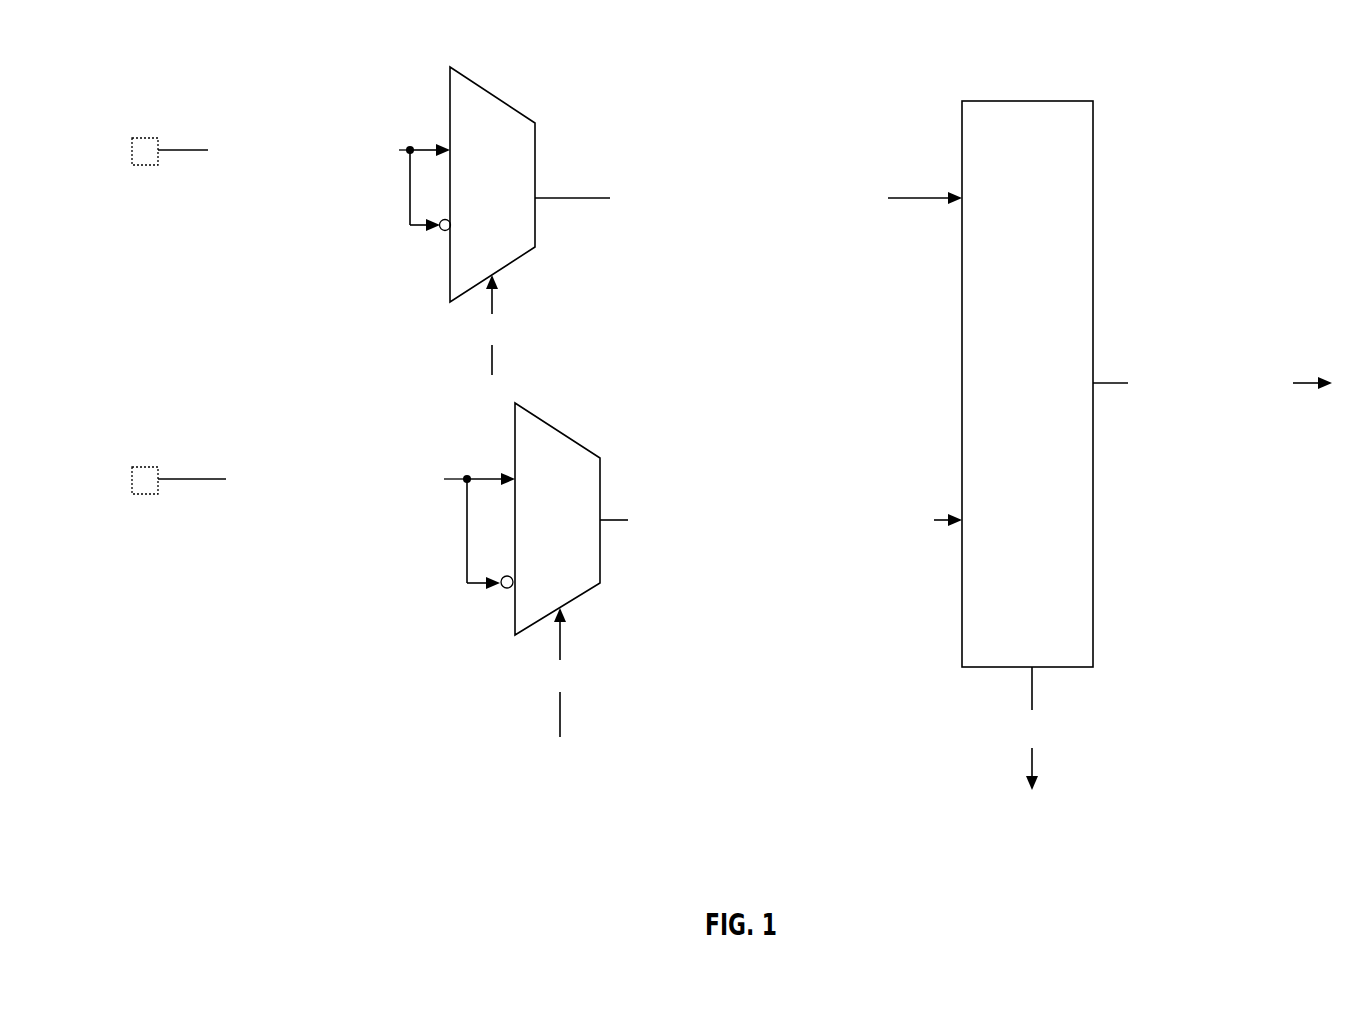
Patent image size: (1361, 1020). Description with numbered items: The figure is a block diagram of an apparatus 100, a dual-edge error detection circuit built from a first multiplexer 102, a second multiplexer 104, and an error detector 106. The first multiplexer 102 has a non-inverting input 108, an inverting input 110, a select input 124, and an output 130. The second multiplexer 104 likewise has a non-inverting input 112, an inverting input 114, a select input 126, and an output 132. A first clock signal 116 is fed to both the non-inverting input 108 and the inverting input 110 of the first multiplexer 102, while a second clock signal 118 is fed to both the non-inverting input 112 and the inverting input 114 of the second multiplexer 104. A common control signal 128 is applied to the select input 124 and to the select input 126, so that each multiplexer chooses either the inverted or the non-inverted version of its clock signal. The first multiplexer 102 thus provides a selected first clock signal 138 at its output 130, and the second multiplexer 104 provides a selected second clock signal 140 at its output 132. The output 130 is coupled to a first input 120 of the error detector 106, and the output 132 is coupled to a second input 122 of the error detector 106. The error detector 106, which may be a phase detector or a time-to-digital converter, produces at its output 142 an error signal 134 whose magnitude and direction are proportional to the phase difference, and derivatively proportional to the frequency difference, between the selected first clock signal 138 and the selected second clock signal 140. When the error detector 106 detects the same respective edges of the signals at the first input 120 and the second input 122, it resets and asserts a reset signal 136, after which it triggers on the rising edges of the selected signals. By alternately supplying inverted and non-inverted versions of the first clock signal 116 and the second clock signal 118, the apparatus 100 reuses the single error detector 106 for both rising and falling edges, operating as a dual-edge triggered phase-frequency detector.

The apparatus 100 is at (1259, 74).
The first multiplexer 102 is at (508, 216).
The second multiplexer 104 is at (572, 550).
The error detector 106 is at (1043, 425).
The non-inverting input 108 is at (451, 142).
The inverting input 110 is at (442, 233).
The non-inverting input 112 is at (516, 471).
The inverting input 114 is at (504, 590).
The first clock signal 116 is at (397, 162).
The second clock signal 118 is at (442, 491).
The first input 120 is at (966, 197).
The second input 122 is at (966, 520).
The select input 124 is at (496, 281).
The select input 126 is at (563, 617).
The control signal 128 is at (565, 338).
The output 130 is at (536, 197).
The output 132 is at (601, 519).
The error signal 134 is at (1290, 395).
The reset signal 136 is at (1110, 743).
The selected first clock signal 138 is at (885, 210).
The selected second clock signal 140 is at (930, 532).
The output 142 is at (1093, 376).